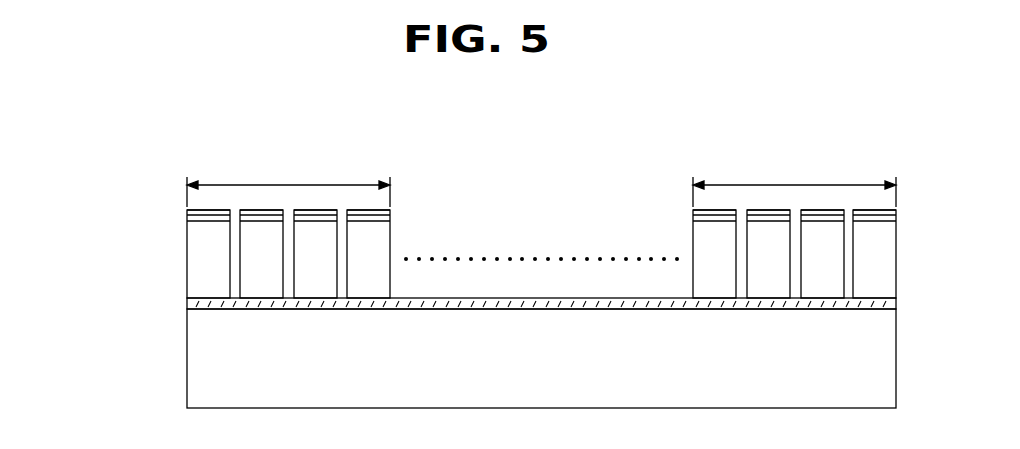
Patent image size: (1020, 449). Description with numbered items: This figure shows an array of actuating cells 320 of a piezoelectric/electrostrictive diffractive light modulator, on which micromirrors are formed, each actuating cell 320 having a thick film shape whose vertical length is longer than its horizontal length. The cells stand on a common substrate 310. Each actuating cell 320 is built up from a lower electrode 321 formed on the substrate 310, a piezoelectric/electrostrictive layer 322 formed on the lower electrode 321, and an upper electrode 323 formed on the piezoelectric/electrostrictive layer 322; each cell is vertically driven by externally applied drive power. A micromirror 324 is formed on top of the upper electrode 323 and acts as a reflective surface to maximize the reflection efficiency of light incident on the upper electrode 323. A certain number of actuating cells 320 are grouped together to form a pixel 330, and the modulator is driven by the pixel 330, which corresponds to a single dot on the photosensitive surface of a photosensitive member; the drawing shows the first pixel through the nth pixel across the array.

The substrate 310 is at (187, 350).
The actuating cell 320 is at (93, 195).
The lower electrode 321 is at (186, 303).
The piezoelectric/electrostrictive layer 322 is at (186, 263).
The upper electrode 323 is at (186, 219).
The micromirror 324 is at (186, 212).
The pixel 330 is at (447, 147).